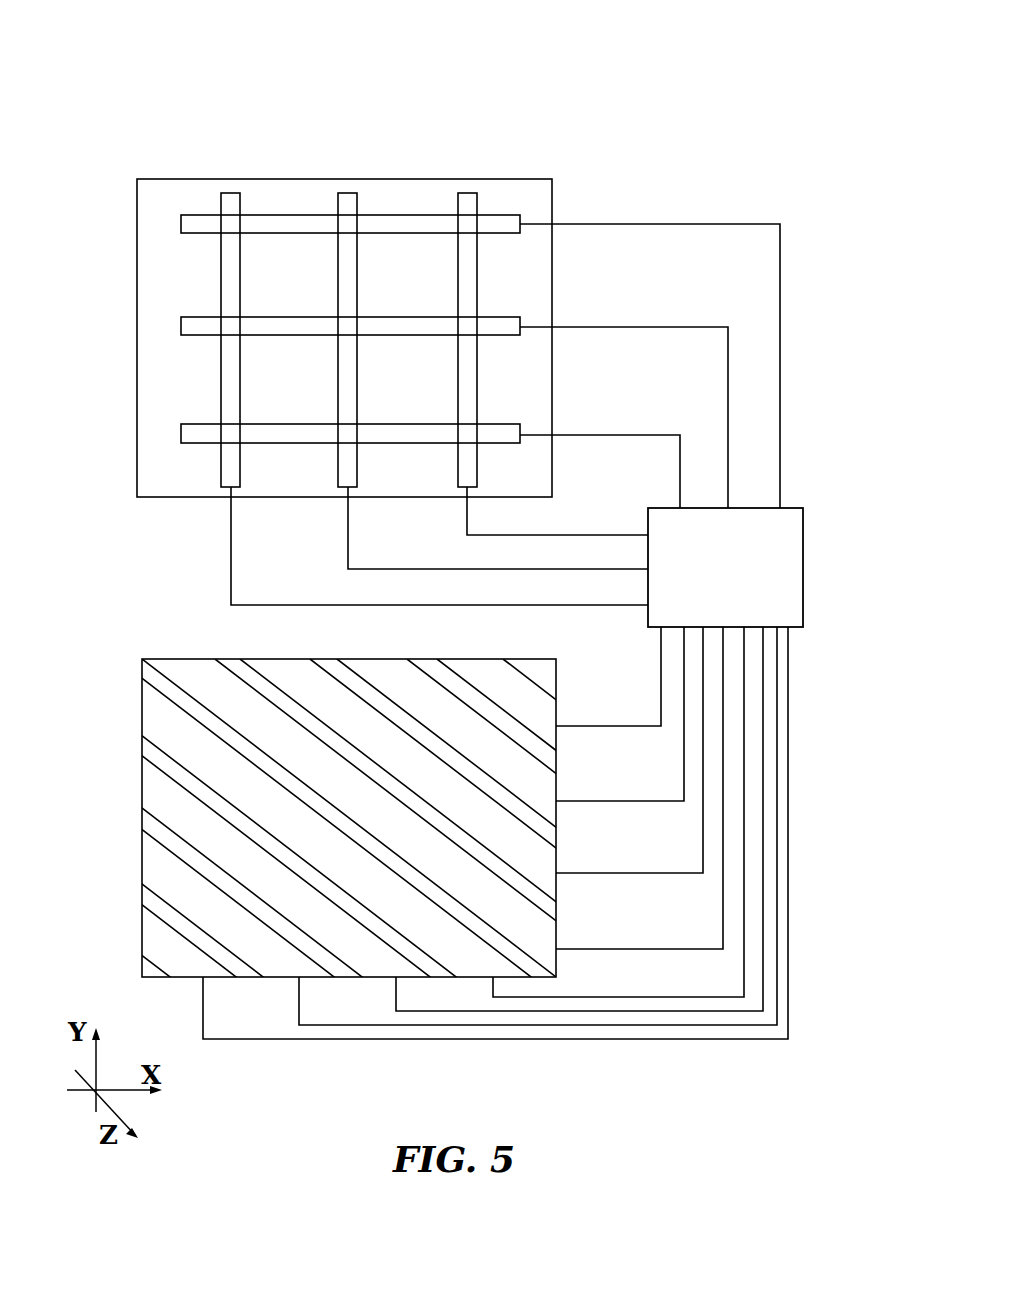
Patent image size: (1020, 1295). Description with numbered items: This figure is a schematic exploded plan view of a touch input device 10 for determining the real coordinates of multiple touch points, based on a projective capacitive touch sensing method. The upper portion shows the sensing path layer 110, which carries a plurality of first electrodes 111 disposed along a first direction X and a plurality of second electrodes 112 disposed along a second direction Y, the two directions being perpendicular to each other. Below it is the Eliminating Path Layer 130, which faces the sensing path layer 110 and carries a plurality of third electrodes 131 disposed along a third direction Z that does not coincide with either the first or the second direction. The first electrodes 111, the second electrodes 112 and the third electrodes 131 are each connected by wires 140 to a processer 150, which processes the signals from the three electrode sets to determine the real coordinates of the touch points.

The touch input device 10 is at (153, 103).
The sensing path layer 110 is at (115, 210).
The first electrodes 111 is at (512, 222).
The second electrodes 112 is at (231, 198).
The Eliminating Path Layer 130 is at (118, 703).
The third electrodes 131 is at (543, 722).
The wires 140 is at (653, 225).
The processer 150 is at (725, 567).